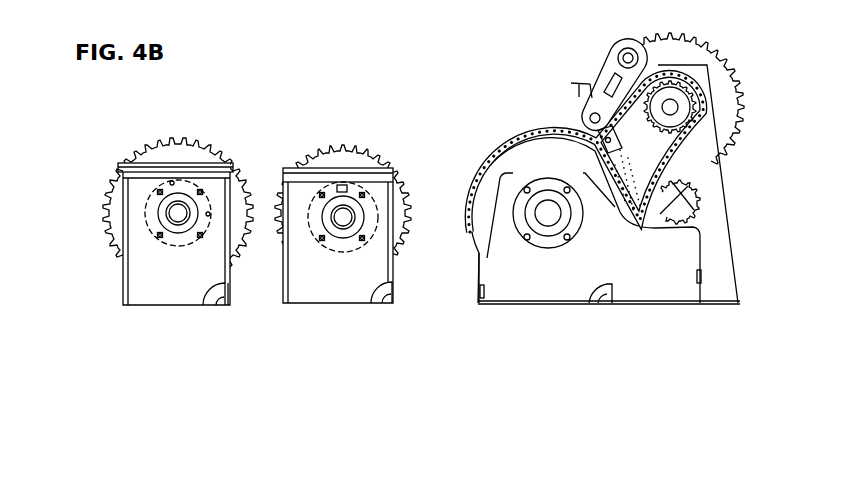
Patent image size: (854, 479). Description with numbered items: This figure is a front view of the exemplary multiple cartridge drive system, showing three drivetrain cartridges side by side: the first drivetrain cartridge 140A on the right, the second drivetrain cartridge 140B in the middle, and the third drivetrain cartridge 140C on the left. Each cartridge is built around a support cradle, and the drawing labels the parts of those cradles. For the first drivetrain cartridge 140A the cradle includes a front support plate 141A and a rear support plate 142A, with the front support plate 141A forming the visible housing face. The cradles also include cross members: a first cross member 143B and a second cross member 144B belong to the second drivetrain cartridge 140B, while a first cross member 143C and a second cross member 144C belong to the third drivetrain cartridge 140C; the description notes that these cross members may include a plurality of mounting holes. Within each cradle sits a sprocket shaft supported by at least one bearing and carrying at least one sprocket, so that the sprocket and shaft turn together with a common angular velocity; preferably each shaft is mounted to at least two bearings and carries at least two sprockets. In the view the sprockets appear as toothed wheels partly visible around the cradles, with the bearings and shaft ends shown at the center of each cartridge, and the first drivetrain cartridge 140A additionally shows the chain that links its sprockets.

The first drivetrain cartridge 140A is at (606, 203).
The second drivetrain cartridge 140B is at (349, 241).
The third drivetrain cartridge 140C is at (135, 241).
The front support plate 141A is at (682, 290).
The rear support plate 142A is at (357, 293).
The first cross member 143B is at (287, 300).
The first cross member 143C is at (127, 288).
The second cross member 144B is at (390, 230).
The second cross member 144C is at (225, 198).